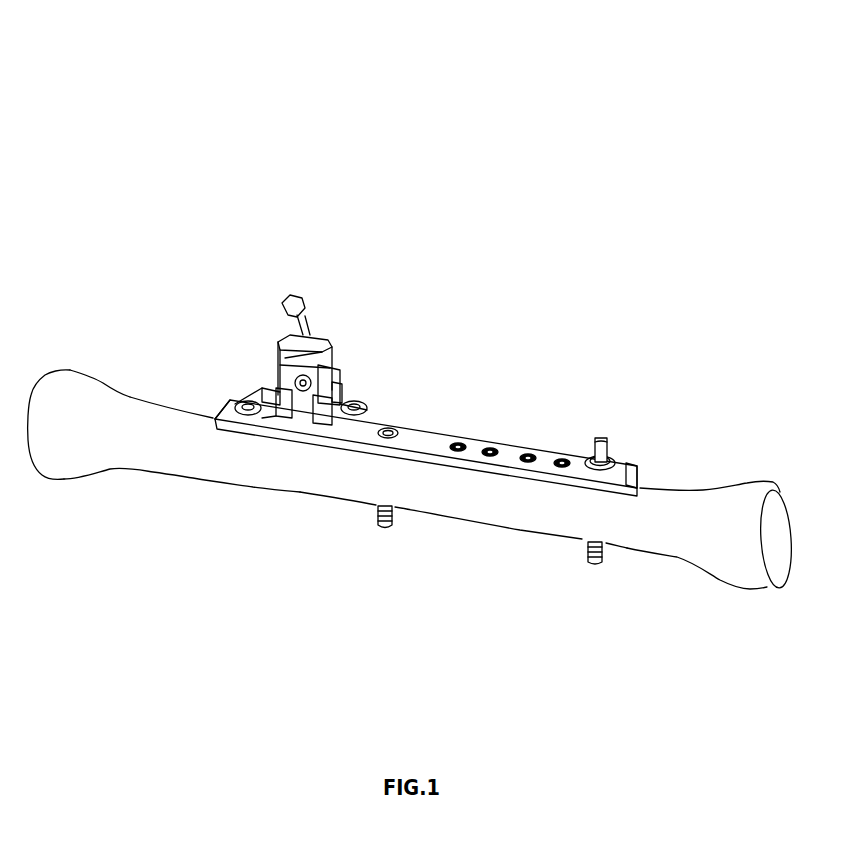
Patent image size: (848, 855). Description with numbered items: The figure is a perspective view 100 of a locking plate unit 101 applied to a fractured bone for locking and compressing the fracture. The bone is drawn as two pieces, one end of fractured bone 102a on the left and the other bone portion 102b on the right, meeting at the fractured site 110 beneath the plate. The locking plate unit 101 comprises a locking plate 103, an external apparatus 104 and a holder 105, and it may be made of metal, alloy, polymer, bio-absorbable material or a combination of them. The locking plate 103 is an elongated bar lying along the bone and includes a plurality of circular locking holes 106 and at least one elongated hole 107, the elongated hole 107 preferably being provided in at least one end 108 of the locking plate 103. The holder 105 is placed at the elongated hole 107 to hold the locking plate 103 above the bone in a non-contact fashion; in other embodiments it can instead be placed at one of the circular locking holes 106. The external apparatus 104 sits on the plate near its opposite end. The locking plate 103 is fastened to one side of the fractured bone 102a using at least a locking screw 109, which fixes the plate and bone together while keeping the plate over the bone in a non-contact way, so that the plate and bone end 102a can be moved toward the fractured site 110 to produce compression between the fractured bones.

The perspective view 100 is at (106, 97).
The locking plate unit 101 is at (481, 390).
The one end of fractured bone 102a is at (158, 458).
The second bone portion 102b is at (518, 500).
The locking plate 103 is at (430, 438).
The external apparatus 104 is at (318, 333).
The holder 105 is at (610, 459).
The circular locking holes 106 is at (529, 457).
The elongated hole 107 is at (582, 464).
The end of the locking plate 108 is at (620, 469).
The locking screw 109 is at (387, 430).
The fractured site 110 is at (404, 500).